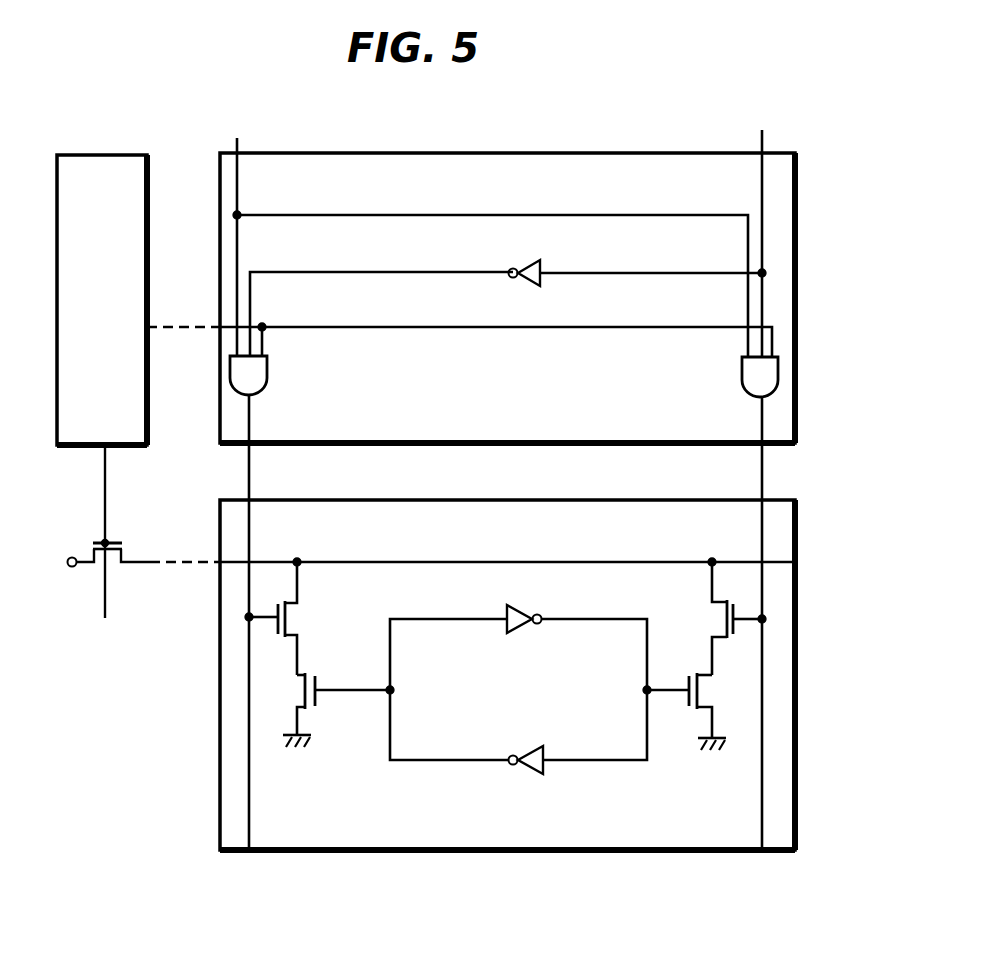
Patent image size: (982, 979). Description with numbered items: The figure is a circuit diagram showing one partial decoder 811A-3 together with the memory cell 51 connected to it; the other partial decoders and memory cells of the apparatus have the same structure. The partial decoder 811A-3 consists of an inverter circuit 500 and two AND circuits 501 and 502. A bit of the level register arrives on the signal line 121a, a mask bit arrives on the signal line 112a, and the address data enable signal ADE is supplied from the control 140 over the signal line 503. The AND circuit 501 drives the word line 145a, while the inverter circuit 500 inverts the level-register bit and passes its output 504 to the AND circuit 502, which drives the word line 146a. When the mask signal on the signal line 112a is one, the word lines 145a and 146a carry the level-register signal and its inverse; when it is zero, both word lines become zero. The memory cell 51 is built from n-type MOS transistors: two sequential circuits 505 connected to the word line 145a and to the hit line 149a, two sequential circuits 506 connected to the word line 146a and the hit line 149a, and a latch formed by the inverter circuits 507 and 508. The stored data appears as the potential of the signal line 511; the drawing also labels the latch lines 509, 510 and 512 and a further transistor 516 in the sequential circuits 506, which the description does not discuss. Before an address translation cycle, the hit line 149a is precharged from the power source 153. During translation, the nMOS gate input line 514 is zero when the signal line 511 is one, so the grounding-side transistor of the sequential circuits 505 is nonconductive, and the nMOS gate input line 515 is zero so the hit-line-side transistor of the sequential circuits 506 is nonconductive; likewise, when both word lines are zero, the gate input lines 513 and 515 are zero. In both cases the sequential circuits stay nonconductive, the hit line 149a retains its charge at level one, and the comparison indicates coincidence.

The control 140 is at (126, 155).
The signal line 112a is at (238, 138).
The partial decoder 811A-3 is at (571, 153).
The signal line 121a is at (762, 128).
The output of the inverter 504 is at (402, 272).
The inverter circuit 500 is at (544, 270).
The signal line 503 is at (154, 327).
The AND circuit 502 is at (270, 377).
The AND circuit 501 is at (740, 378).
The word line 146a is at (250, 478).
The word line 145a is at (764, 478).
The hit line 149a is at (137, 562).
The power source 153 is at (73, 568).
The nMOS gate input line 515 is at (268, 614).
The two sequential circuits 506 is at (317, 654).
The transistor 516 is at (339, 688).
The signal line 511 is at (416, 619).
The inverter circuit 507 is at (518, 610).
The latch connection line 510 is at (600, 619).
The two sequential circuits 505 is at (706, 656).
The nMOS gate input line 513 is at (738, 615).
The nMOS gate input line 514 is at (701, 655).
The inverter circuit 508 is at (522, 748).
The latch connection line 509 is at (437, 762).
The latch connection line 512 is at (606, 762).
The memory cell 51 is at (518, 851).